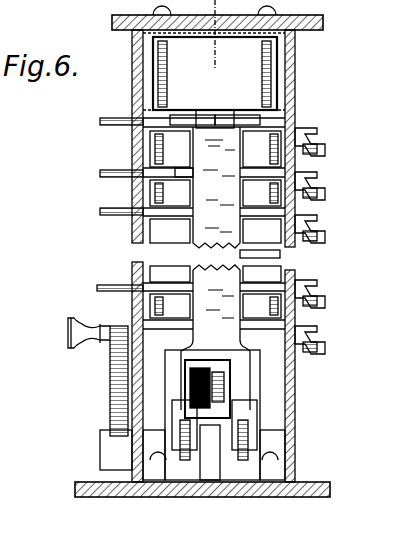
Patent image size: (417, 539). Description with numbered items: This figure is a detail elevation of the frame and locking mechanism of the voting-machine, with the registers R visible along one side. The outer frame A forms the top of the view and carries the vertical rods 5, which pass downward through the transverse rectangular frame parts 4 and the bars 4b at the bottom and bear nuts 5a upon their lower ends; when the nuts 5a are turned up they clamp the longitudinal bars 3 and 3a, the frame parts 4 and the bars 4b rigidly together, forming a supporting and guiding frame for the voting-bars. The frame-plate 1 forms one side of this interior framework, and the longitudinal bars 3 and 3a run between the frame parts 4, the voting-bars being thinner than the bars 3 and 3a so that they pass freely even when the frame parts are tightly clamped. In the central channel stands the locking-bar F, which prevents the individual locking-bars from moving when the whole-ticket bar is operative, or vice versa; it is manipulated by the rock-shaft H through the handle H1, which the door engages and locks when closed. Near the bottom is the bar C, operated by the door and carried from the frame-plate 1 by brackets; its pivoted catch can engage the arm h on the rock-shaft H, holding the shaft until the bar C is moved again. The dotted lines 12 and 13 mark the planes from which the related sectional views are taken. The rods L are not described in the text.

The frame A is at (313, 30).
The section line 13 13 is at (235, 7).
The vertical rods 5 is at (170, 69).
The transverse rectangular frame parts 4 is at (191, 112).
The longitudinal bars 3 is at (243, 118).
The rod L is at (186, 109).
The frame-plate 1 is at (143, 162).
The longitudinal bars 3a is at (181, 168).
The locking-bar F is at (214, 218).
The section line 12 12 is at (163, 364).
The bars 4b is at (253, 335).
The bar C is at (205, 389).
The arm h is at (190, 415).
The rock-shaft H is at (100, 449).
The handle H1 is at (88, 318).
The registers R is at (320, 195).
The nuts 5a is at (329, 334).